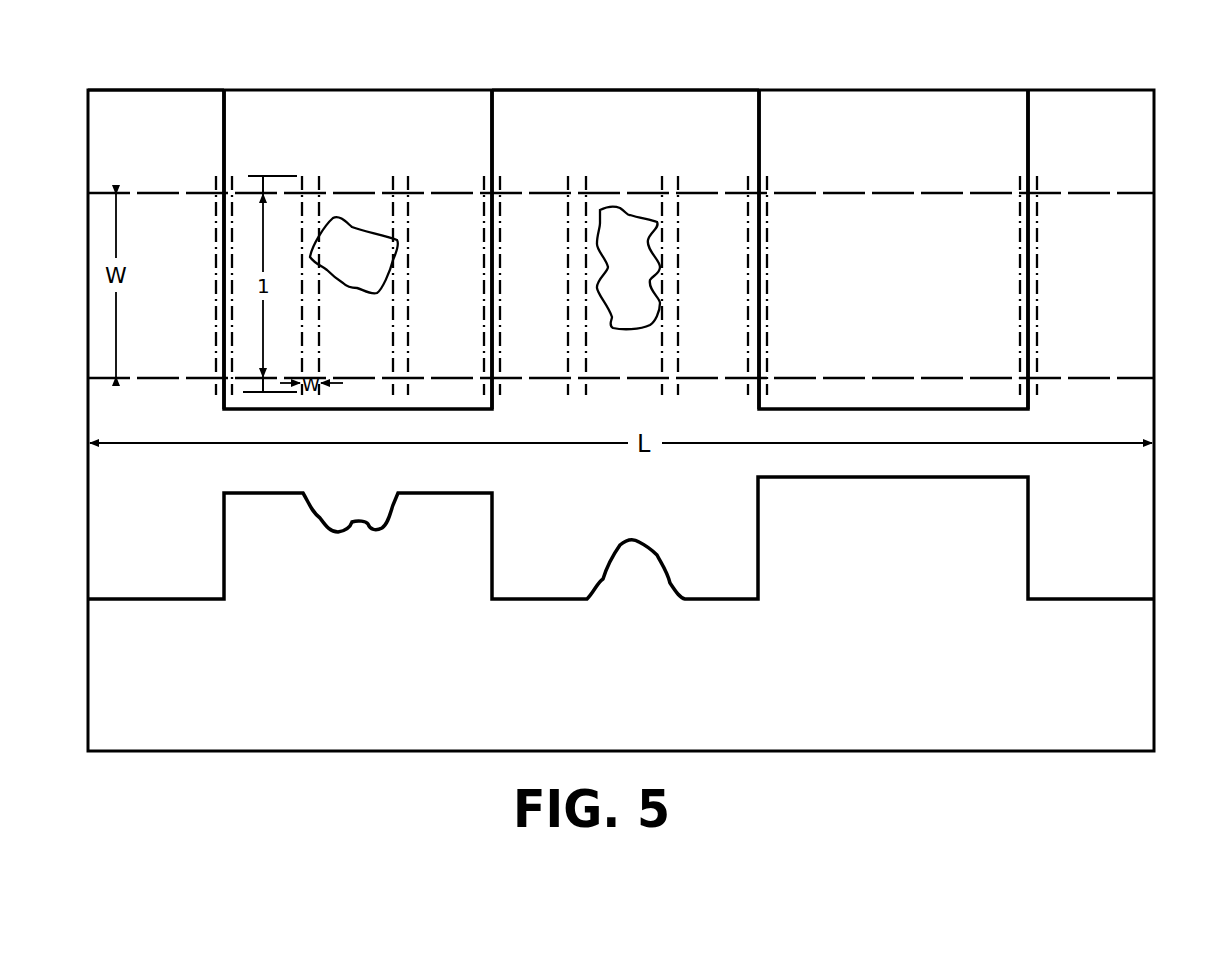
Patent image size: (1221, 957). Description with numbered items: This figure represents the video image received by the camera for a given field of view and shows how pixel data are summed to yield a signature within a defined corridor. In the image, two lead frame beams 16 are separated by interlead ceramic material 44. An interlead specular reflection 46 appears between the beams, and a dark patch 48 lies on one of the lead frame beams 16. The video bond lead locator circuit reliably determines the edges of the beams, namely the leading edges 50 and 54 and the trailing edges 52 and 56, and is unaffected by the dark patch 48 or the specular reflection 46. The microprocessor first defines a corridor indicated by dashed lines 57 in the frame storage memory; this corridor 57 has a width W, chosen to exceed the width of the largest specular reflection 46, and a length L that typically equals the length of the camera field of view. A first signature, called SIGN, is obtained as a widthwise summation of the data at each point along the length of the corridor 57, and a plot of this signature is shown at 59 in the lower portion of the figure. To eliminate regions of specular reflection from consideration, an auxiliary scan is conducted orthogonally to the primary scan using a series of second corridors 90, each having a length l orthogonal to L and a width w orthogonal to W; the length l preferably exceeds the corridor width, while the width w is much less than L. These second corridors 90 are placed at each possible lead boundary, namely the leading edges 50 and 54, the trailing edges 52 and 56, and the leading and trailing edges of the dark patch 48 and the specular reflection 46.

The lead frame beam 16 is at (448, 105).
The interlead ceramic material 44 is at (158, 105).
The interlead specular reflection 46 is at (619, 217).
The dark patch 48 is at (352, 227).
The leading edge 50 is at (225, 128).
The trailing edge 52 is at (494, 108).
The leading edge 54 is at (760, 110).
The trailing edge 56 is at (1030, 110).
The corridor 57 is at (872, 198).
The first signature plot 59 is at (224, 533).
The second corridor 90 is at (214, 183).